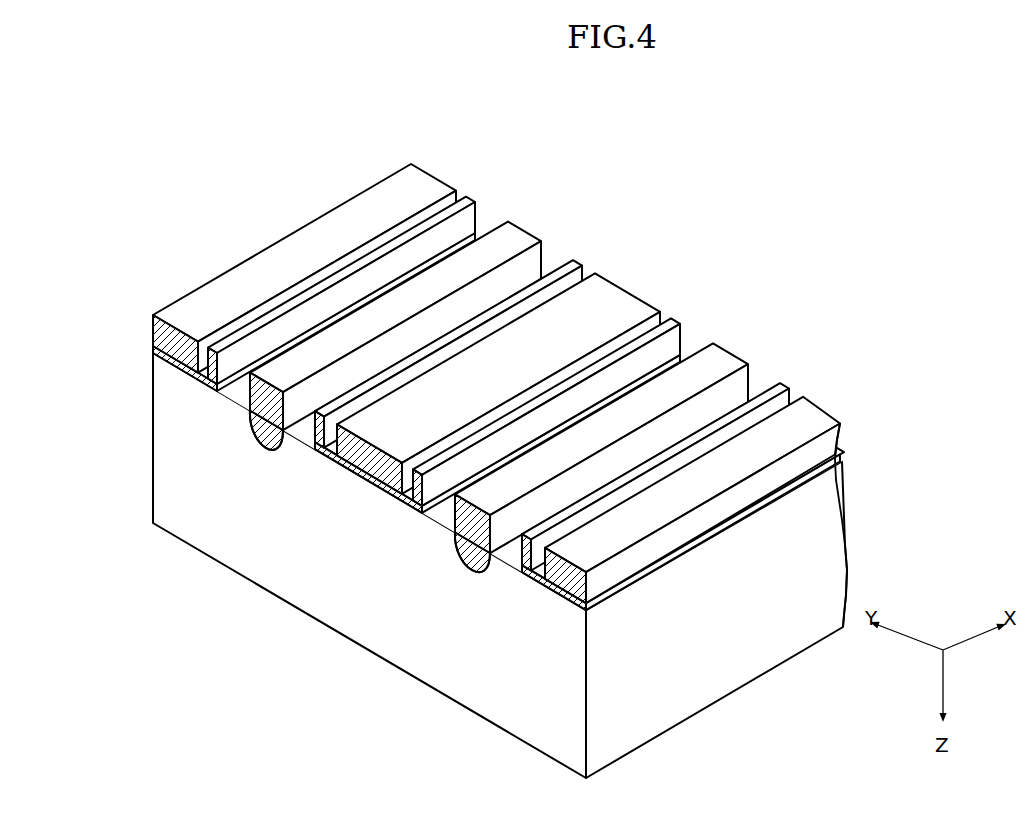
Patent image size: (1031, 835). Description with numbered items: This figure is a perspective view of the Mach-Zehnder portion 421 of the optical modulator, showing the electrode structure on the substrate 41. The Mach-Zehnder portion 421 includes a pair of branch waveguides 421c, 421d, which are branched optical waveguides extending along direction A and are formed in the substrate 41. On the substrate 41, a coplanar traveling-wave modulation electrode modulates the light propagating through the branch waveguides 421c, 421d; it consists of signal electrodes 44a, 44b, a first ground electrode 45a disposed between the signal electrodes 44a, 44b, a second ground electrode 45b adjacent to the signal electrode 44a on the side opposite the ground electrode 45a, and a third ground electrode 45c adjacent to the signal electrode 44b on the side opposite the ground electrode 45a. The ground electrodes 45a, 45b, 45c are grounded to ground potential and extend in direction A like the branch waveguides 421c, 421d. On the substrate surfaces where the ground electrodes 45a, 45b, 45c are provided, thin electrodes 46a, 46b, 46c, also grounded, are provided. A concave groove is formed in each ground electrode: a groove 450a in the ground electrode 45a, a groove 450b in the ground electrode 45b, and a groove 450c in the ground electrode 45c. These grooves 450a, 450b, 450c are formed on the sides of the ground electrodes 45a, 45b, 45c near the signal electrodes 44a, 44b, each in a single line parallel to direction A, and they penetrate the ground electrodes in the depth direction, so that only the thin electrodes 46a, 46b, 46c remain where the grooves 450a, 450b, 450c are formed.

The substrate 41 is at (545, 707).
The Mach-Zehnder portion 421 is at (886, 250).
The branch waveguide 421c is at (464, 566).
The branch waveguide 421d is at (284, 453).
The signal electrode 44a is at (480, 527).
The signal electrode 44b is at (258, 397).
The ground electrode 45a is at (428, 498).
The ground electrode 45b is at (599, 586).
The ground electrode 45c is at (142, 334).
The thin electrode 46a is at (377, 478).
The thin electrode 46b is at (573, 597).
The thin electrode 46c is at (178, 367).
The groove 450a is at (515, 403).
The groove 450b is at (701, 502).
The groove 450c is at (310, 279).